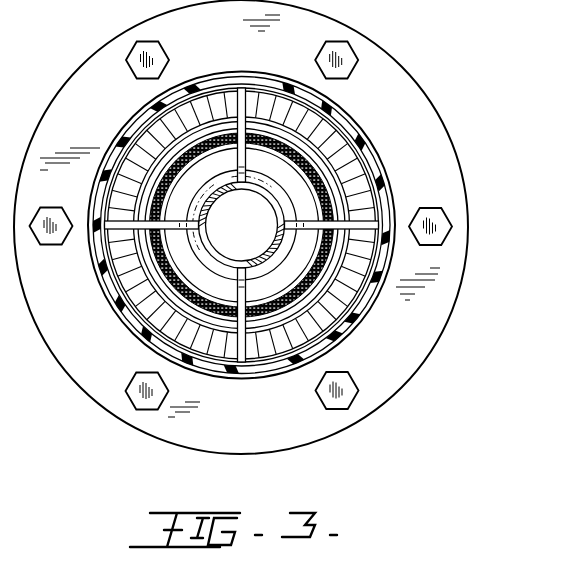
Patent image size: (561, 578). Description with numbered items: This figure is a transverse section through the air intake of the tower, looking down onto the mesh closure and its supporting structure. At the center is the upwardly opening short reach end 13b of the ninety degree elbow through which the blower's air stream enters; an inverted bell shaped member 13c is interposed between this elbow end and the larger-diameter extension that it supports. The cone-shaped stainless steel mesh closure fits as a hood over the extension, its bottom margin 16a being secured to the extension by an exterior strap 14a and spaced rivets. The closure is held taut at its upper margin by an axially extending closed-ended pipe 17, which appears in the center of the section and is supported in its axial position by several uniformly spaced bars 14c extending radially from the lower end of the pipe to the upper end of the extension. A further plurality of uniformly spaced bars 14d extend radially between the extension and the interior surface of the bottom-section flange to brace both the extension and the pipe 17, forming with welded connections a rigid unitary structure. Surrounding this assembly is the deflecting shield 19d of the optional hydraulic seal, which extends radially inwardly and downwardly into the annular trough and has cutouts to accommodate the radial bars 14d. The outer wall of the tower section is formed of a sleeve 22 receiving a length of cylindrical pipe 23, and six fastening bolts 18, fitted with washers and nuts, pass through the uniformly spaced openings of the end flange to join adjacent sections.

The short reach end 13b is at (224, 181).
The inverted bell shaped member 13c is at (160, 157).
The exterior strap 14a is at (338, 200).
The bars 14c is at (268, 148).
The bars 14d is at (377, 222).
The bottom margin 16a is at (148, 262).
The closed-ended pipe 17 is at (237, 268).
The fastening bolts 18 is at (354, 57).
The deflecting shield 19d is at (114, 248).
The sleeve 22 is at (373, 148).
The cylindrical pipe 23 is at (352, 319).